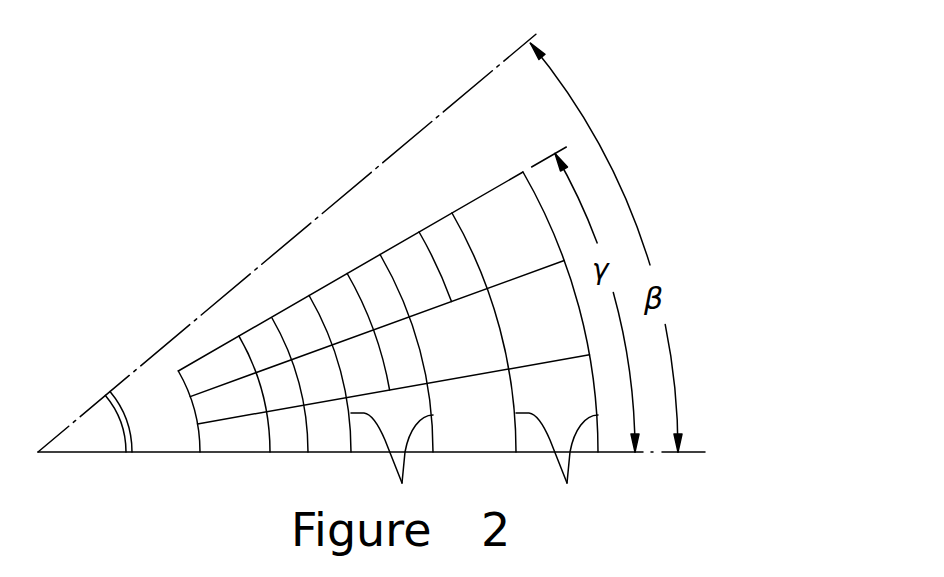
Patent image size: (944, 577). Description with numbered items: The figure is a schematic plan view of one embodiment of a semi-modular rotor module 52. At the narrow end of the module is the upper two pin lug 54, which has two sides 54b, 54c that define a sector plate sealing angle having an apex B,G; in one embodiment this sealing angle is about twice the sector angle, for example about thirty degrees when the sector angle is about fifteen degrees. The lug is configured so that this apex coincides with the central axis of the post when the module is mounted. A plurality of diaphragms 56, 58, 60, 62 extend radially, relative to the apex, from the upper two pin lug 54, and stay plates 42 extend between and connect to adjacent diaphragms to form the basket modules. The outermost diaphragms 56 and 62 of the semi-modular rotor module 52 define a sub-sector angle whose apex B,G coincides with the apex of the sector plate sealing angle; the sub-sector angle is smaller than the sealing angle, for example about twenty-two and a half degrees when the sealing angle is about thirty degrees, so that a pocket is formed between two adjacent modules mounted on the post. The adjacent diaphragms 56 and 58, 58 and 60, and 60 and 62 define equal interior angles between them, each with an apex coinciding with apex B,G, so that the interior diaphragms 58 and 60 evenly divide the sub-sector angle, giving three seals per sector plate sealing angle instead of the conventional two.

The semi-modular rotor module 52 is at (268, 154).
The upper two pin lug 54 is at (122, 390).
The side of upper two pin lug 54b is at (182, 330).
The side of upper two pin lug 54c is at (147, 454).
The apex of sector plate sealing angle and apex of sub-sector angle B,G is at (38, 454).
The diaphragm 56 is at (272, 318).
The diaphragm 58 is at (347, 274).
The diaphragm 60 is at (419, 232).
The diaphragm 62 is at (493, 192).
The stay plates 42 is at (474, 463).